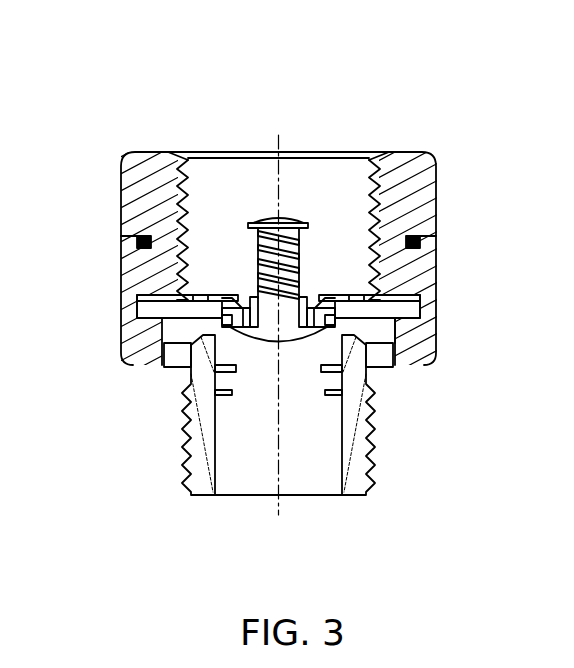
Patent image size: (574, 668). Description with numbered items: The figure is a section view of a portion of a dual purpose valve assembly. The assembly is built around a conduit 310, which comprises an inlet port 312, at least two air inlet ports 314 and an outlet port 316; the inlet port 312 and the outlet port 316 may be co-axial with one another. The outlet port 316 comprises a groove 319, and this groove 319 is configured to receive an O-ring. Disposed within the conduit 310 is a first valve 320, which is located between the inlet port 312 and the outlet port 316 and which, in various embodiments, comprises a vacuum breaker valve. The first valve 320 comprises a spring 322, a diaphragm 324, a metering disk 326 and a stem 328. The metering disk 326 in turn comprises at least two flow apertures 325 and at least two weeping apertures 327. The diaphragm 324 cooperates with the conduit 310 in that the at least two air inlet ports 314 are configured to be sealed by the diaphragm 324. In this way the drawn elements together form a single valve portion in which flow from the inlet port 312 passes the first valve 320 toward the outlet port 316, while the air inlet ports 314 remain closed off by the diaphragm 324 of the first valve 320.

The conduit 310 is at (128, 172).
The inlet port 312 is at (218, 183).
The air inlet ports 314 is at (173, 358).
The outlet port 316 is at (238, 447).
The groove 319 is at (217, 377).
The first valve 320 is at (388, 318).
The spring 322 is at (300, 222).
The diaphragm 324 is at (165, 310).
The flow apertures 325 is at (197, 294).
The metering disk 326 is at (392, 300).
The weeping apertures 327 is at (250, 300).
The stem 328 is at (392, 338).